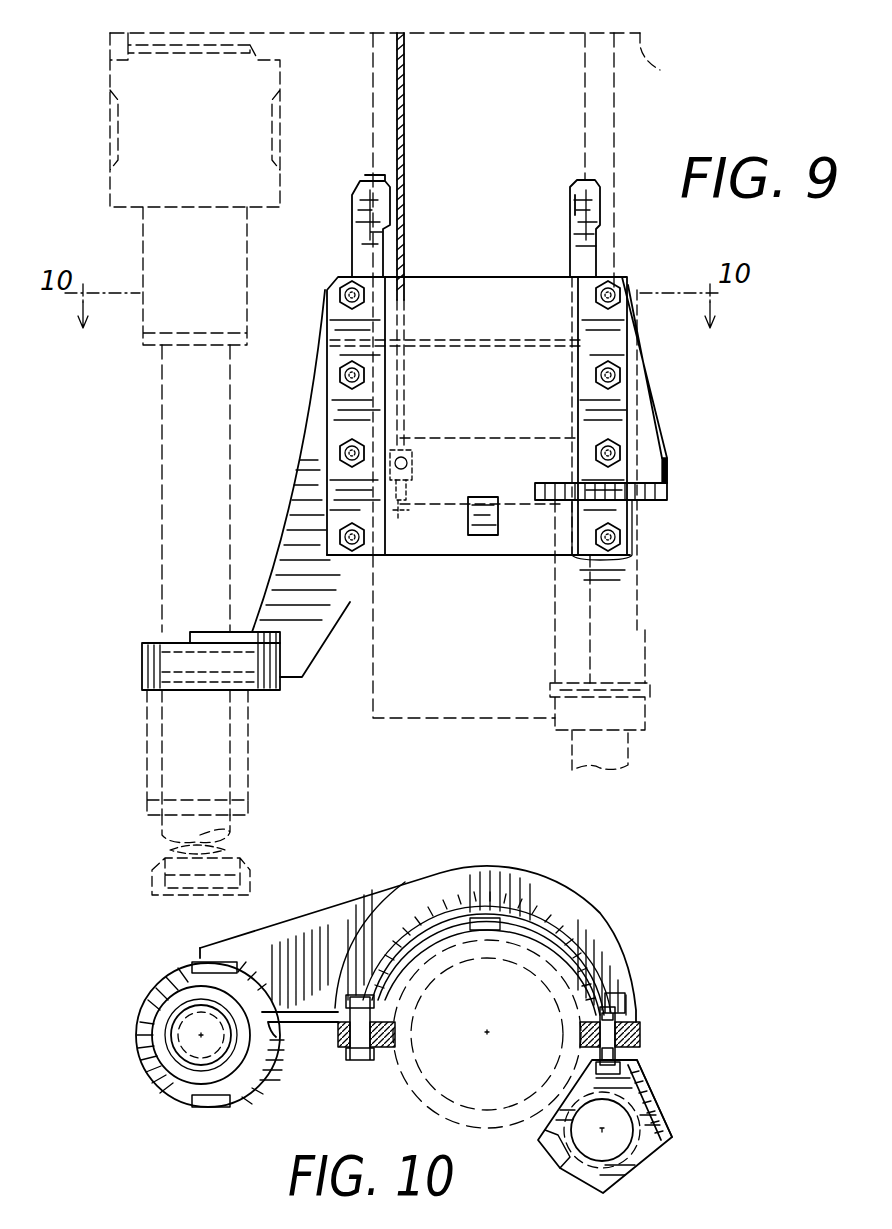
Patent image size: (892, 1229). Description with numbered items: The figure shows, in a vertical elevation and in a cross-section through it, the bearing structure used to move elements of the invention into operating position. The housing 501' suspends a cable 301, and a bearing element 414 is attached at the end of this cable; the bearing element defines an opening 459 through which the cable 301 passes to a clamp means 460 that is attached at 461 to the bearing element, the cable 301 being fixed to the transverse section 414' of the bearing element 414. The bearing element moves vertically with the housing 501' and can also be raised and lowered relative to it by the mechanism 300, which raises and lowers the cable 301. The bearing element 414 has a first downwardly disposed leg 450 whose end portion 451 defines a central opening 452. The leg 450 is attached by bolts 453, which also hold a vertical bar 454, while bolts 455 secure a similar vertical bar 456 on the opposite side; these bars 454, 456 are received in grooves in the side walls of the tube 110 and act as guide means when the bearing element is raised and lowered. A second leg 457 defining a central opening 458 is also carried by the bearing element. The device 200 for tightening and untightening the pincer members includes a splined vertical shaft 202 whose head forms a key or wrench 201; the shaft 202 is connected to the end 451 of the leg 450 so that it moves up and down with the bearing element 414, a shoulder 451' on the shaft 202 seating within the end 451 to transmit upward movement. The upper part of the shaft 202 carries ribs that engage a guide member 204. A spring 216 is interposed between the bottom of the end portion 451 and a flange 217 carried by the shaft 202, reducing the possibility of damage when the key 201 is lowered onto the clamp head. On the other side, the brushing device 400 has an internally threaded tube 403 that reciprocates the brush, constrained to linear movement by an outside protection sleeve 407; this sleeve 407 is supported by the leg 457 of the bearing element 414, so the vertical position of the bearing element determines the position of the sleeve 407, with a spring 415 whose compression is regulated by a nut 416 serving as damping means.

In FIG. 9, the device 200 is at (120, 560).
In FIG. 9, the key or wrench 201 is at (152, 884).
In FIG. 9, the vertical shaft 202 is at (160, 482).
In FIG. 10, the vertical shaft 202 is at (172, 1022).
In FIG. 9, the guide member 204 is at (118, 135).
In FIG. 9, the spring 216 is at (147, 750).
In FIG. 9, the flange 217 is at (162, 818).
In FIG. 9, the mechanism 300 is at (662, 400).
In FIG. 9, the cable 301 is at (405, 125).
In FIG. 9, the brushing device 400 is at (660, 637).
In FIG. 9, the internally threaded tube 403 is at (628, 756).
In FIG. 9, the protection sleeve 407 is at (556, 322).
In FIG. 10, the protection sleeve 407 is at (660, 1118).
In FIG. 9, the bearing element 414 is at (497, 413).
In FIG. 10, the bearing element 414 is at (418, 951).
In FIG. 9, the transverse section 414' is at (490, 552).
In FIG. 9, the spring 415 is at (646, 580).
In FIG. 9, the nut 416 is at (650, 697).
In FIG. 9, the first downwardly disposed leg 450 is at (300, 520).
In FIG. 9, the end portion 451 is at (170, 661).
In FIG. 10, the end portion 451 is at (210, 1053).
In FIG. 9, the shoulder 451' is at (166, 623).
In FIG. 10, the shoulder 451' is at (123, 967).
In FIG. 10, the central opening 452 is at (175, 1052).
In FIG. 9, the bolts 453 is at (345, 378).
In FIG. 10, the bolts 453 is at (345, 1052).
In FIG. 9, the vertical bar 454 is at (362, 190).
In FIG. 10, the vertical bar 454 is at (396, 1037).
In FIG. 9, the bolts 455 is at (612, 378).
In FIG. 10, the bolts 455 is at (642, 1043).
In FIG. 9, the vertical bar 456 is at (598, 190).
In FIG. 10, the vertical bar 456 is at (580, 1032).
In FIG. 9, the second leg 457 is at (652, 500).
In FIG. 10, the second leg 457 is at (658, 1148).
In FIG. 10, the central opening 458 is at (630, 1100).
In FIG. 9, the opening 459 is at (410, 352).
In FIG. 10, the opening 459 is at (415, 925).
In FIG. 9, the clamp means 460 is at (412, 450).
In FIG. 9, the attachment point 461 is at (404, 555).
In FIG. 9, the housing 501' is at (681, 56).
In FIG. 9, the tube 110 is at (385, 688).
In FIG. 10, the tube 110 is at (425, 1108).